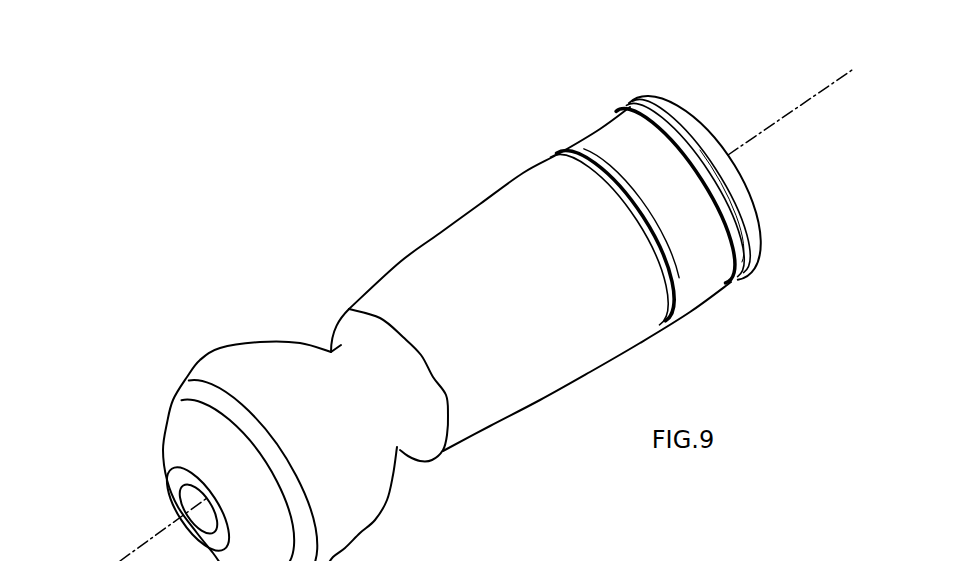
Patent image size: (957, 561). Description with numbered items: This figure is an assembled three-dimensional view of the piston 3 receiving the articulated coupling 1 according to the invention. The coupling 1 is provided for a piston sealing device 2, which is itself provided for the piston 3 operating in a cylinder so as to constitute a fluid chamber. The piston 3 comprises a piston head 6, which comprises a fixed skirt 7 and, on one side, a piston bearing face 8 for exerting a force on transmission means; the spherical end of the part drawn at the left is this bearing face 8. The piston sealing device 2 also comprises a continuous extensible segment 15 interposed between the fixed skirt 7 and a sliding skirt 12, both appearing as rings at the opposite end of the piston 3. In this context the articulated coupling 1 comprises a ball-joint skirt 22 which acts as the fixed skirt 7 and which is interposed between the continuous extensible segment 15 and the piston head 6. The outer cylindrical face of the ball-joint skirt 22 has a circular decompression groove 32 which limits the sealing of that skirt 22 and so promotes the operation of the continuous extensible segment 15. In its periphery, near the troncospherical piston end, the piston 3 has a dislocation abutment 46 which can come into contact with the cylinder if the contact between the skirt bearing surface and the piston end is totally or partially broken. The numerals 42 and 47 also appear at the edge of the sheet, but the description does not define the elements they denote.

The articulated coupling 1 is at (536, 107).
The piston sealing device 2 is at (592, 88).
The piston 3 is at (374, 251).
The piston head 6 is at (523, 175).
The fixed skirt 7 is at (702, 282).
The piston bearing face 8 is at (177, 439).
The sliding skirt 12 is at (656, 106).
The continuous extensible segment 15 is at (684, 128).
The ball-joint skirt 22 is at (708, 248).
The circular decompression groove 32 is at (692, 211).
The component 42 is at (844, 548).
The dislocation abutment 46 is at (612, 347).
The component 47 is at (756, 557).